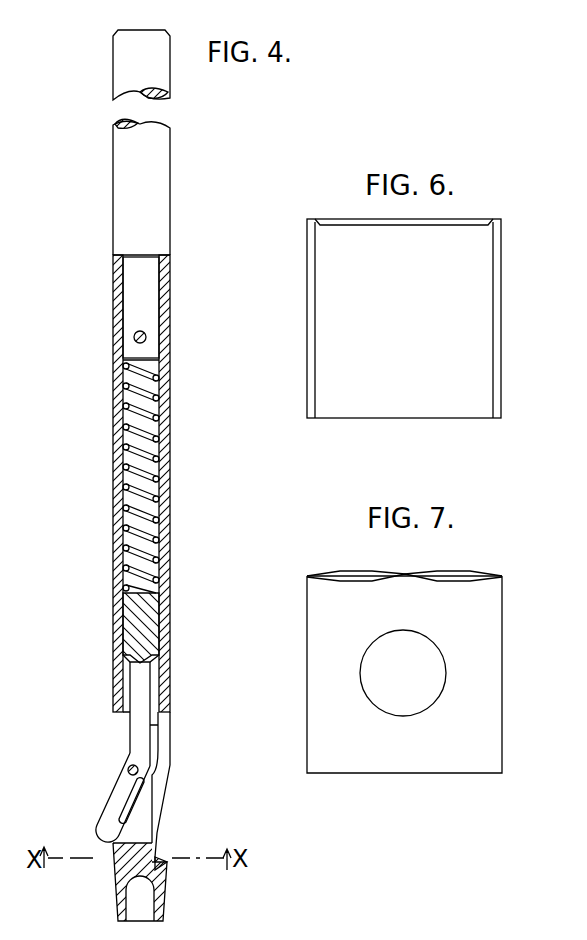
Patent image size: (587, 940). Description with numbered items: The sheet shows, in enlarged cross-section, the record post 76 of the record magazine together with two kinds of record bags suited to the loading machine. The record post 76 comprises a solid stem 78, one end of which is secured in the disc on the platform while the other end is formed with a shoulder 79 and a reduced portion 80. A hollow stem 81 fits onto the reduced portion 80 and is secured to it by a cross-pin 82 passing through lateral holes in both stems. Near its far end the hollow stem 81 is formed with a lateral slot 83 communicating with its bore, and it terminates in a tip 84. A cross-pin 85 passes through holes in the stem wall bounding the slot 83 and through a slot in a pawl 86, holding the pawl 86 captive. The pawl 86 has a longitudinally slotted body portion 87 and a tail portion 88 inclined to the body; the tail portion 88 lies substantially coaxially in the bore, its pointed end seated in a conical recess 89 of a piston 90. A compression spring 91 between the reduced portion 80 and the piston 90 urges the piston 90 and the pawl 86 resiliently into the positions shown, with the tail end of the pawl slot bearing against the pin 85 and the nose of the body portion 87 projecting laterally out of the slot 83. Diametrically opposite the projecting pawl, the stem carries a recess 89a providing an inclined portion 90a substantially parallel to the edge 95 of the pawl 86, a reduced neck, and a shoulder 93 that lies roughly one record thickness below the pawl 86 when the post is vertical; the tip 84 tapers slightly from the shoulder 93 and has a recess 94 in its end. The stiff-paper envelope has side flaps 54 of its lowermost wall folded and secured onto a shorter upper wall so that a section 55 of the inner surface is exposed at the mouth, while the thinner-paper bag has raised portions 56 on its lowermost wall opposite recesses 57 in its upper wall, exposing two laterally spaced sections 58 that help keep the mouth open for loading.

In FIG. 6, the side flaps 54 is at (306, 314).
In FIG. 6, the section of inner surface of lowermost wall 55 is at (470, 217).
In FIG. 7, the raised portions 56 is at (360, 568).
In FIG. 7, the recesses 57 is at (357, 583).
In FIG. 7, the exposed sections 58 is at (330, 577).
In FIG. 4, the record post 76 is at (82, 418).
In FIG. 4, the solid stem 78 is at (132, 191).
In FIG. 4, the shoulder 79 is at (133, 256).
In FIG. 4, the reduced portion 80 is at (142, 300).
In FIG. 4, the hollow stem 81 is at (118, 468).
In FIG. 4, the cross-pin 82 is at (134, 338).
In FIG. 4, the lateral slot 83 is at (163, 737).
In FIG. 4, the tip 84 is at (115, 900).
In FIG. 4, the cross-pin 85 is at (127, 766).
In FIG. 4, the pawl 86 is at (135, 727).
In FIG. 4, the body portion 87 is at (110, 793).
In FIG. 4, the tail portion 88 is at (140, 680).
In FIG. 4, the conical recess 89 is at (163, 652).
In FIG. 4, the recess 89a is at (158, 822).
In FIG. 4, the piston 90 is at (130, 624).
In FIG. 4, the inclined portion 90a is at (163, 792).
In FIG. 4, the compression spring 91 is at (140, 507).
In FIG. 4, the shoulder 93 is at (165, 860).
In FIG. 4, the recess 94 is at (150, 903).
In FIG. 4, the edge of the pawl 95 is at (108, 837).